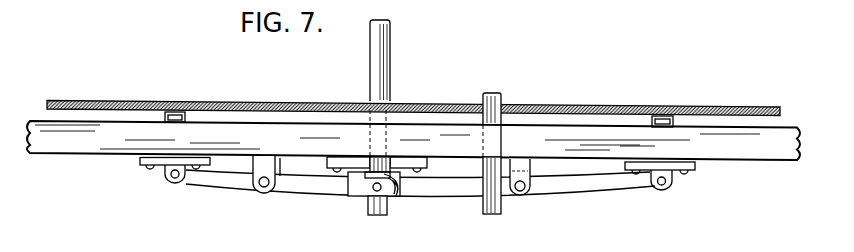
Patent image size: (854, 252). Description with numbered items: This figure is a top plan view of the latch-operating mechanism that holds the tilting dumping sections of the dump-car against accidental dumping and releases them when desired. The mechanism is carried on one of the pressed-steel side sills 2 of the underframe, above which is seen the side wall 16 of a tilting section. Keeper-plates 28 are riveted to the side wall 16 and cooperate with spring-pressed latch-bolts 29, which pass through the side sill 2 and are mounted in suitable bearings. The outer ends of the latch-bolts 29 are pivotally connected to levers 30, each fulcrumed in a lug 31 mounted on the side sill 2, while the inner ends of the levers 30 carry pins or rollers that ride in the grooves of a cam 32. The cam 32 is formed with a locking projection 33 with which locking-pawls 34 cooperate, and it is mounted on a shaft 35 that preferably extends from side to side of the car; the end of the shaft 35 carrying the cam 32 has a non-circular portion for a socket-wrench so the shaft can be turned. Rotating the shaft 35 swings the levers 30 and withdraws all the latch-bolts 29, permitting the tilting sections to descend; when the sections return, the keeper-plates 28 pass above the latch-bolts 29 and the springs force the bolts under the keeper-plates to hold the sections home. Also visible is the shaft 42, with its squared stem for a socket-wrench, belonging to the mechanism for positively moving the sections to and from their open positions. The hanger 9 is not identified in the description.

The side sill 2 is at (413, 140).
The hanger bracket 9 is at (174, 186).
The side wall 16 is at (511, 101).
The keeper-plate 28 is at (186, 112).
The latch-bolt 29 is at (164, 114).
The lever 30 is at (325, 190).
The lug 31 is at (262, 193).
The cam 32 is at (393, 197).
The locking projection 33 is at (368, 162).
The locking-pawl 34 is at (412, 163).
The shaft 35 is at (391, 64).
The shaft 42 is at (487, 212).